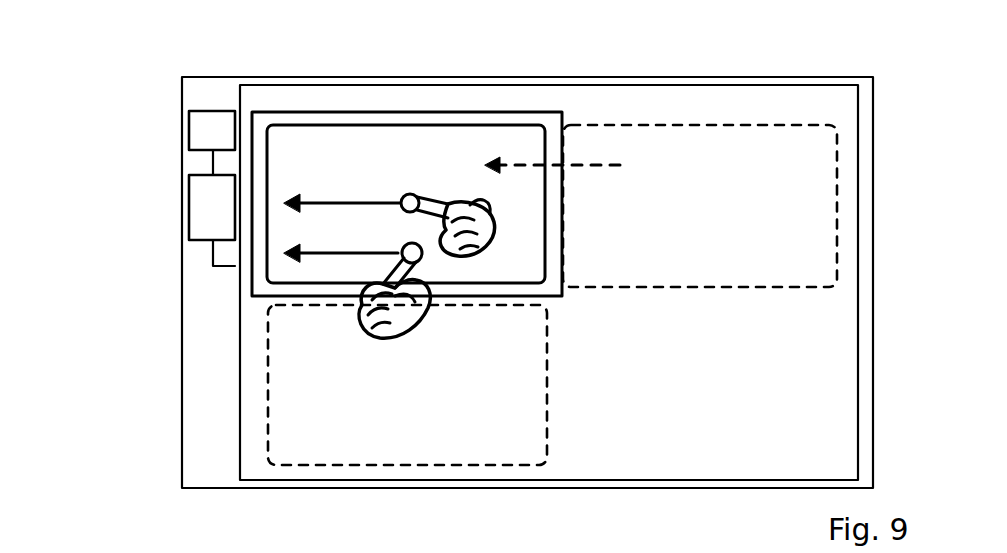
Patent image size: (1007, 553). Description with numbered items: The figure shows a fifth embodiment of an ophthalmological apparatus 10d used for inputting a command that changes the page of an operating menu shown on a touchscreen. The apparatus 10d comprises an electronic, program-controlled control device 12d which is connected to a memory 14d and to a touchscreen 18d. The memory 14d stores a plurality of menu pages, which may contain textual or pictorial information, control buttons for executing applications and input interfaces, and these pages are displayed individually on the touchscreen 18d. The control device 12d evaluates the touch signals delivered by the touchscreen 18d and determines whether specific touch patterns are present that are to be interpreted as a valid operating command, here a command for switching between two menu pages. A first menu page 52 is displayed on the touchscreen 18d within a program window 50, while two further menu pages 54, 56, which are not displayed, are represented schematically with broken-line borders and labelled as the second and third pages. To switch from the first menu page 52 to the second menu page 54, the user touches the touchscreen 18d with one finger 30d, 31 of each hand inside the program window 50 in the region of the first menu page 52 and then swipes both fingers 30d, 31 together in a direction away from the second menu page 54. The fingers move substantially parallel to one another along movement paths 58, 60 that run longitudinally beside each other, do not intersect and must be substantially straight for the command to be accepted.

The ophthalmological apparatus 10d is at (599, 46).
The control device 12d is at (189, 221).
The memory 14d is at (189, 131).
The touchscreen 18d is at (232, 99).
The program window 50 is at (277, 84).
The first menu page 52 is at (473, 152).
The second menu page 54 is at (714, 151).
The second menu page 56 is at (483, 408).
The movement path 58 is at (384, 202).
The movement path 60 is at (386, 256).
The finger 30d is at (456, 212).
The finger 31 is at (380, 286).